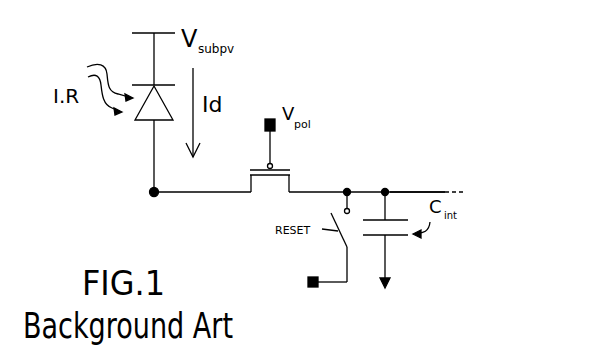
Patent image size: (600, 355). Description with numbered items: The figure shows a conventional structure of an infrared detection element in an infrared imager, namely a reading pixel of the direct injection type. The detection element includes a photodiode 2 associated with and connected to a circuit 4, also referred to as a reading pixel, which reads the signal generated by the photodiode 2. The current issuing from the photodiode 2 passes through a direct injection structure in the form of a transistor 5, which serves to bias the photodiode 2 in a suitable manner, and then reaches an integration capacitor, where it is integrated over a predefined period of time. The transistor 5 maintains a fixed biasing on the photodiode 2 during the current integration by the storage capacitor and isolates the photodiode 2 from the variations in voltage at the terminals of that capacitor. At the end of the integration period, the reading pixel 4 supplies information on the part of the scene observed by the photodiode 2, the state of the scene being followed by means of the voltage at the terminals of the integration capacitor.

The photodiode 2 is at (145, 122).
The circuit 4 is at (447, 172).
The transistor 5 is at (253, 208).